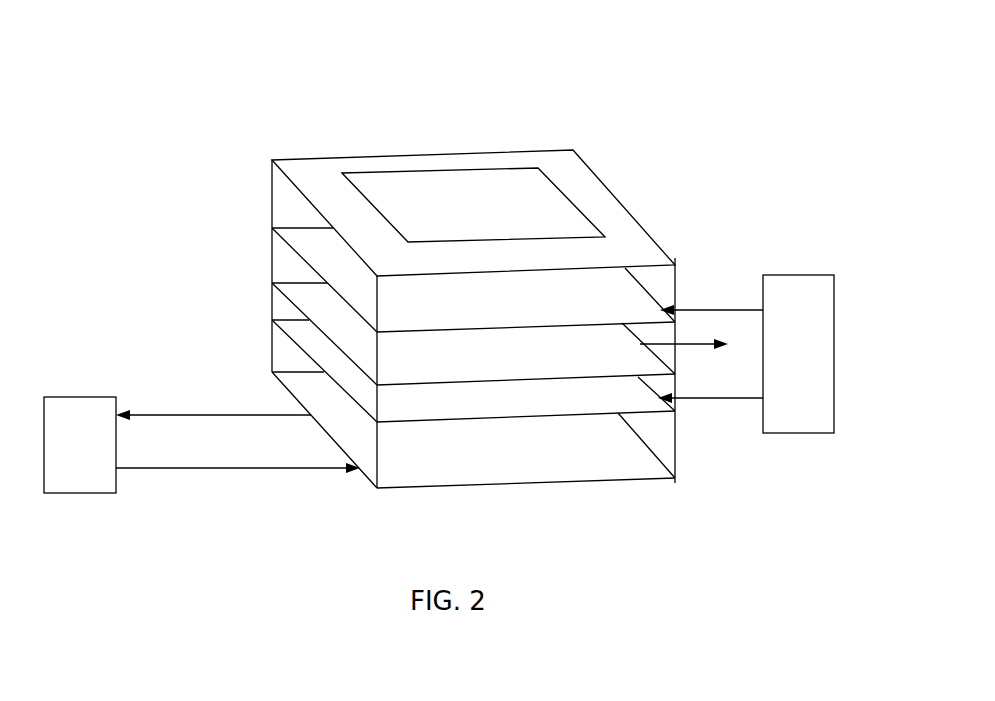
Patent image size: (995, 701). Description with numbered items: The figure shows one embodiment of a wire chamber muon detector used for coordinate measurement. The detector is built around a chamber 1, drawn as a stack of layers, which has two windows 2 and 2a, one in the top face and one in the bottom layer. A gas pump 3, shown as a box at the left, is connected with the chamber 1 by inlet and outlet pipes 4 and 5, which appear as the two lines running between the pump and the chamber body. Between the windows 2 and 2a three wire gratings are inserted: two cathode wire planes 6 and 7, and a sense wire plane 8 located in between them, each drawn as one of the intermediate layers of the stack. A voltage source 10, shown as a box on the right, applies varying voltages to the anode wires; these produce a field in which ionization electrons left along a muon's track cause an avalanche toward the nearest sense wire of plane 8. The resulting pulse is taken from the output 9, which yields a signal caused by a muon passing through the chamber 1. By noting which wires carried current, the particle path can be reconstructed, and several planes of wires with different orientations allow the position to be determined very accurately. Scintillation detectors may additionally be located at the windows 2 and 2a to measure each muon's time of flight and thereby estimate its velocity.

The chamber 1 is at (590, 103).
The window 2 is at (473, 205).
The window 2a is at (473, 430).
The gas pump 3 is at (80, 445).
The inlet pipe 4 is at (238, 459).
The outlet pipe 5 is at (213, 406).
The cathode wire plane 6 is at (287, 237).
The cathode wire plane 7 is at (321, 362).
The sense wire plane 8 is at (306, 311).
The output 9 is at (692, 353).
The voltage source 10 is at (746, 354).